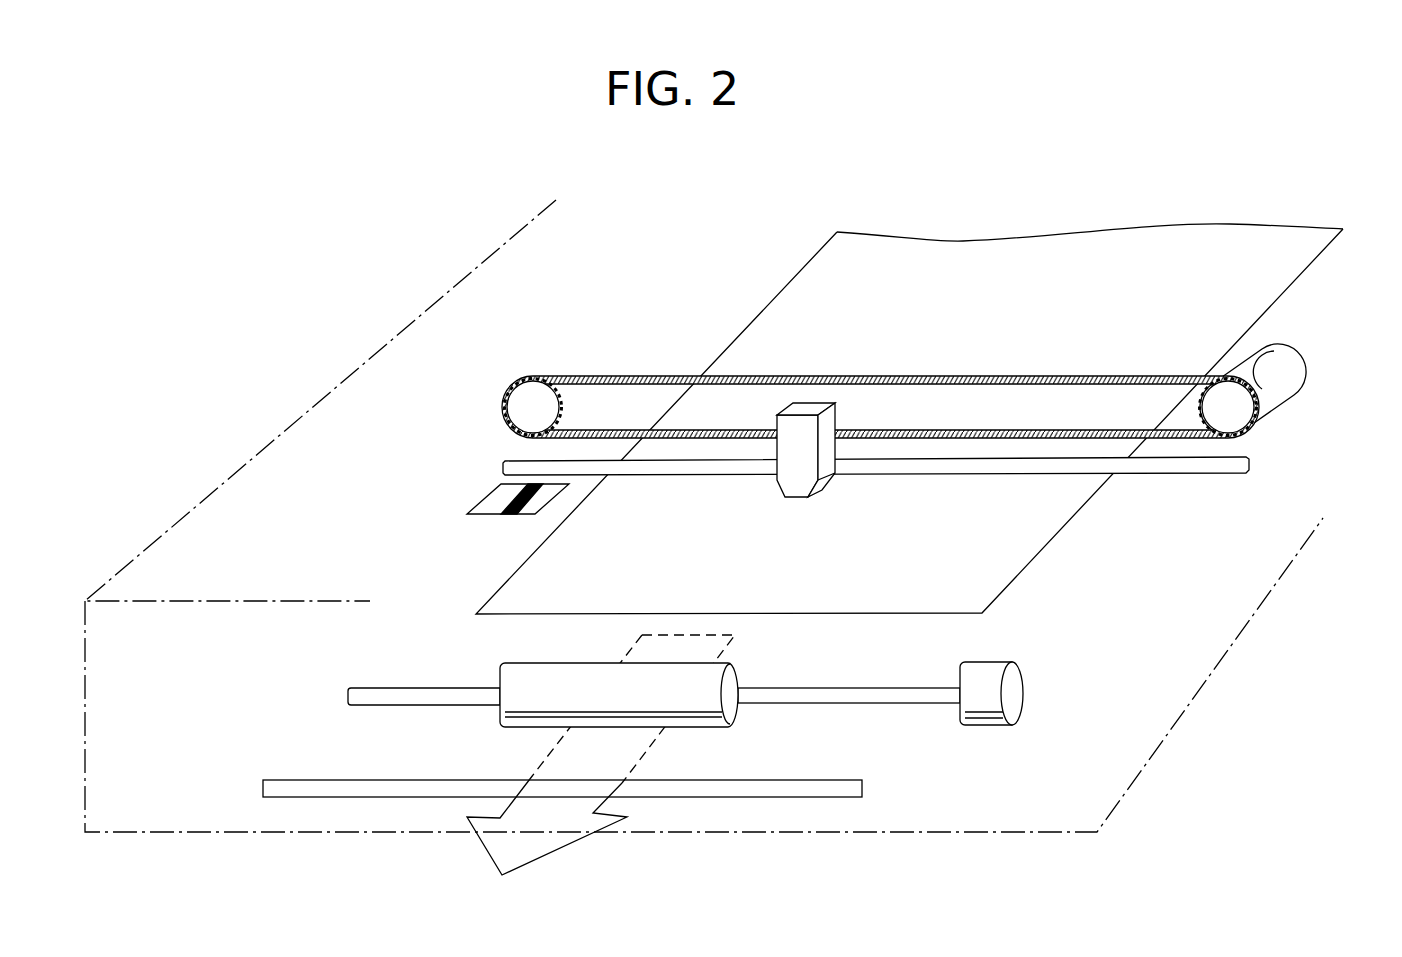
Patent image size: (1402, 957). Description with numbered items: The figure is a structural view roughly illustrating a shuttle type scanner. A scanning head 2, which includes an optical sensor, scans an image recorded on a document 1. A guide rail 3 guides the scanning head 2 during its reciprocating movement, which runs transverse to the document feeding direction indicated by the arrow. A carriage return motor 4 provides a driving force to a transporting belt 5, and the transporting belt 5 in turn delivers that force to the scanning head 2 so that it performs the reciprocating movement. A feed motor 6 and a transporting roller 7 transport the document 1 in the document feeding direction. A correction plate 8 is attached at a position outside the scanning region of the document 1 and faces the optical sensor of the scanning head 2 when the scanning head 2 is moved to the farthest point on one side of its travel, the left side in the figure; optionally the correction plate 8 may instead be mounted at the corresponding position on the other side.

The document 1 is at (982, 577).
The scanning head 2 is at (795, 497).
The guide rail 3 is at (1177, 475).
The carriage return motor 4 is at (1287, 373).
The transporting belt 5 is at (990, 377).
The feed motor 6 is at (1007, 702).
The transporting roller 7 is at (690, 702).
The correction plate 8 is at (488, 514).